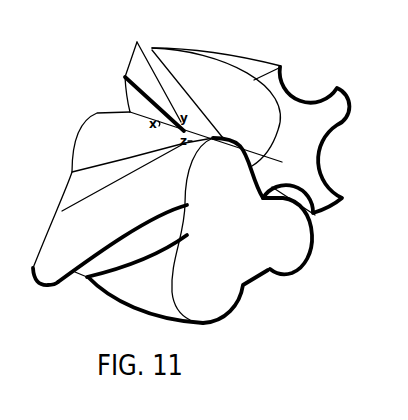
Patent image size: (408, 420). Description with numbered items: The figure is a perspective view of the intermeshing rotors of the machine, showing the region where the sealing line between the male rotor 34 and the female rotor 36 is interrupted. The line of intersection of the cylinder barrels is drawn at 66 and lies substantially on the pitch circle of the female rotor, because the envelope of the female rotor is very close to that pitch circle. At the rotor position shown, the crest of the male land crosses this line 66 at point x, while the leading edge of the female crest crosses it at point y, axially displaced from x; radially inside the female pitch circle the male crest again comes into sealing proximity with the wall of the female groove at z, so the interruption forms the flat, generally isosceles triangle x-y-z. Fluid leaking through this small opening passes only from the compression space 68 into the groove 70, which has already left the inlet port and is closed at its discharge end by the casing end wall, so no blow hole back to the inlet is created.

The hub / cam body 34 is at (226, 198).
The star-shaped cutter 36 is at (277, 144).
The line of intersection of the cylinder barrels 66 is at (125, 109).
The compression space 68 is at (126, 81).
The groove 70 is at (80, 187).